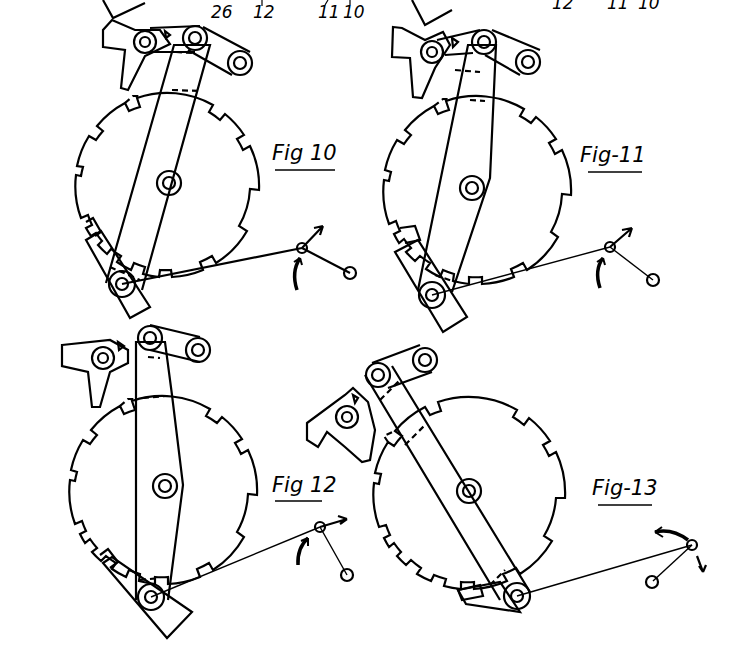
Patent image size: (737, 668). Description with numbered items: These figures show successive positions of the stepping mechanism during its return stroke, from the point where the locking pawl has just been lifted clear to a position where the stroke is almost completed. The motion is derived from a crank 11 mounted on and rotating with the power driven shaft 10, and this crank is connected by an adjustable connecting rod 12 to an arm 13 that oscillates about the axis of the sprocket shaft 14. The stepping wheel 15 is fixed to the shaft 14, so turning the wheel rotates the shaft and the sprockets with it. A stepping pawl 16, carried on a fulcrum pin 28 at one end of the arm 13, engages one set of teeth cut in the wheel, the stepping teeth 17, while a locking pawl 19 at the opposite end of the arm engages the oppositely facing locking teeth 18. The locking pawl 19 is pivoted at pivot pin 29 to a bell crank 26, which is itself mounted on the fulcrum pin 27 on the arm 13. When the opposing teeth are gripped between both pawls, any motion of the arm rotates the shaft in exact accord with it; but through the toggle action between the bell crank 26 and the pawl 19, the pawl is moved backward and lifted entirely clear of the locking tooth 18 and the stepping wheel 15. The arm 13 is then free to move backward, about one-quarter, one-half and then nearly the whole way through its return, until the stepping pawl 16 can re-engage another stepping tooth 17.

In FIG. 10, the power driven shaft 10 is at (350, 279).
In FIG. 11, the power driven shaft 10 is at (650, 284).
In FIG. 12, the power driven shaft 10 is at (345, 581).
In FIG. 13, the power driven shaft 10 is at (653, 588).
In FIG. 10, the crank 11 is at (320, 262).
In FIG. 11, the crank 11 is at (628, 265).
In FIG. 12, the crank 11 is at (324, 541).
In FIG. 13, the crank 11 is at (680, 562).
In FIG. 10, the adjustable connecting rod 12 is at (268, 258).
In FIG. 11, the adjustable connecting rod 12 is at (595, 257).
In FIG. 12, the adjustable connecting rod 12 is at (267, 553).
In FIG. 13, the adjustable connecting rod 12 is at (618, 572).
In FIG. 10, the arm 13 is at (140, 195).
In FIG. 11, the arm 13 is at (478, 157).
In FIG. 12, the arm 13 is at (148, 455).
In FIG. 13, the arm 13 is at (486, 512).
In FIG. 10, the sprocket shaft 14 is at (158, 179).
In FIG. 11, the sprocket shaft 14 is at (484, 188).
In FIG. 12, the sprocket shaft 14 is at (153, 487).
In FIG. 13, the sprocket shaft 14 is at (485, 484).
In FIG. 10, the stepping wheel 15 is at (118, 128).
In FIG. 11, the stepping wheel 15 is at (523, 133).
In FIG. 12, the stepping wheel 15 is at (110, 427).
In FIG. 13, the stepping wheel 15 is at (508, 447).
In FIG. 10, the stepping pawl 16 is at (100, 250).
In FIG. 11, the stepping pawl 16 is at (407, 267).
In FIG. 12, the stepping pawl 16 is at (115, 570).
In FIG. 13, the stepping pawl 16 is at (493, 603).
In FIG. 10, the stepping teeth 17 is at (86, 224).
In FIG. 11, the stepping teeth 17 is at (405, 233).
In FIG. 12, the stepping teeth 17 is at (85, 528).
In FIG. 13, the stepping teeth 17 is at (473, 601).
In FIG. 10, the locking teeth 18 is at (124, 101).
In FIG. 11, the locking teeth 18 is at (428, 112).
In FIG. 12, the locking teeth 18 is at (118, 402).
In FIG. 13, the locking teeth 18 is at (388, 477).
In FIG. 10, the locking pawl 19 is at (104, 36).
In FIG. 11, the locking pawl 19 is at (420, 78).
In FIG. 12, the locking pawl 19 is at (98, 383).
In FIG. 13, the locking pawl 19 is at (362, 446).
In FIG. 10, the bell crank 26 is at (220, 45).
In FIG. 11, the bell crank 26 is at (505, 62).
In FIG. 12, the bell crank 26 is at (147, 358).
In FIG. 13, the bell crank 26 is at (405, 358).
In FIG. 10, the fulcrum pin 27 is at (188, 44).
In FIG. 11, the fulcrum pin 27 is at (497, 34).
In FIG. 12, the fulcrum pin 27 is at (138, 334).
In FIG. 13, the fulcrum pin 27 is at (390, 374).
In FIG. 10, the fulcrum pin 28 is at (118, 284).
In FIG. 11, the fulcrum pin 28 is at (450, 296).
In FIG. 12, the fulcrum pin 28 is at (140, 597).
In FIG. 13, the fulcrum pin 28 is at (517, 606).
In FIG. 10, the pivot pin 29 is at (135, 48).
In FIG. 11, the pivot pin 29 is at (497, 53).
In FIG. 12, the pivot pin 29 is at (92, 354).
In FIG. 13, the pivot pin 29 is at (345, 410).